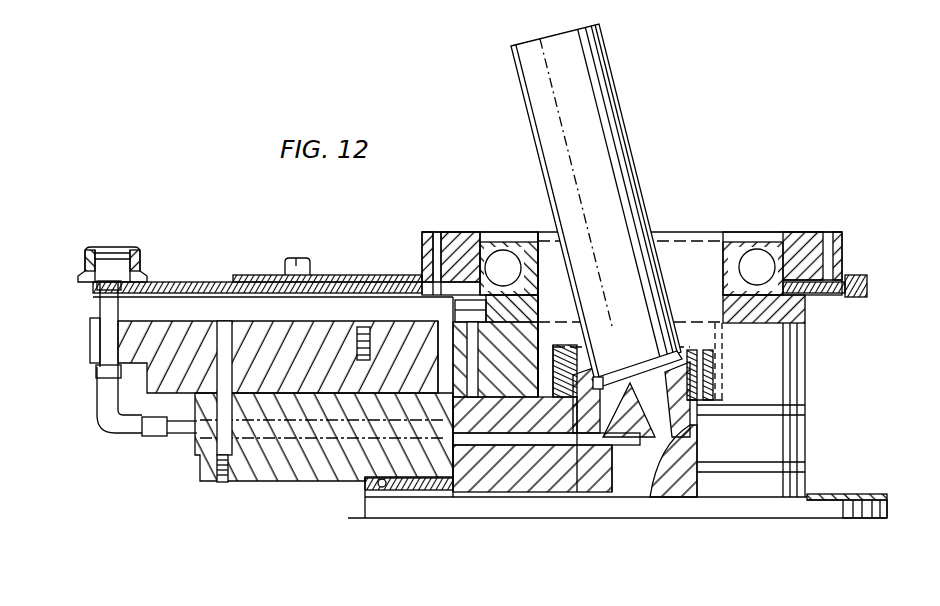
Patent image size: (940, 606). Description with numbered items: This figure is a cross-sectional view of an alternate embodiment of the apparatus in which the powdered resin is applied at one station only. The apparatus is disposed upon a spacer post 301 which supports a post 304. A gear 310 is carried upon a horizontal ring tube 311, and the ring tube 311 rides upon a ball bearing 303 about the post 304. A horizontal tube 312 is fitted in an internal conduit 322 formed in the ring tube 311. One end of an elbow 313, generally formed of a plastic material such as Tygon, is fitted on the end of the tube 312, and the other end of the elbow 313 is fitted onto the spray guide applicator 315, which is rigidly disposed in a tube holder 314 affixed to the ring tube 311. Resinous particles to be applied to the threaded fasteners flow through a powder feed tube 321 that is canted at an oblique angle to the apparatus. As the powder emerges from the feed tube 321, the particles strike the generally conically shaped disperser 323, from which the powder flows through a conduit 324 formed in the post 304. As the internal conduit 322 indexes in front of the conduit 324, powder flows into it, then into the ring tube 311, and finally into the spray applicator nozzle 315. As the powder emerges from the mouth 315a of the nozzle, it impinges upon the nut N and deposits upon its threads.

The spacer post 301 is at (890, 514).
The ball bearing 303 is at (876, 495).
The post 304 is at (808, 438).
The gear 310 is at (240, 482).
The horizontal ring tube 311 is at (193, 447).
The horizontal tube 312 is at (173, 437).
The elbow 313 is at (117, 428).
The tube holder 314 is at (90, 348).
The spray guide applicator 315 is at (100, 308).
The mouth 315a is at (96, 290).
The powder feed tube 321 is at (618, 99).
The internal conduit 322 is at (310, 455).
The disperser 323 is at (660, 497).
The conduit 324 is at (498, 439).
The nut N is at (136, 257).